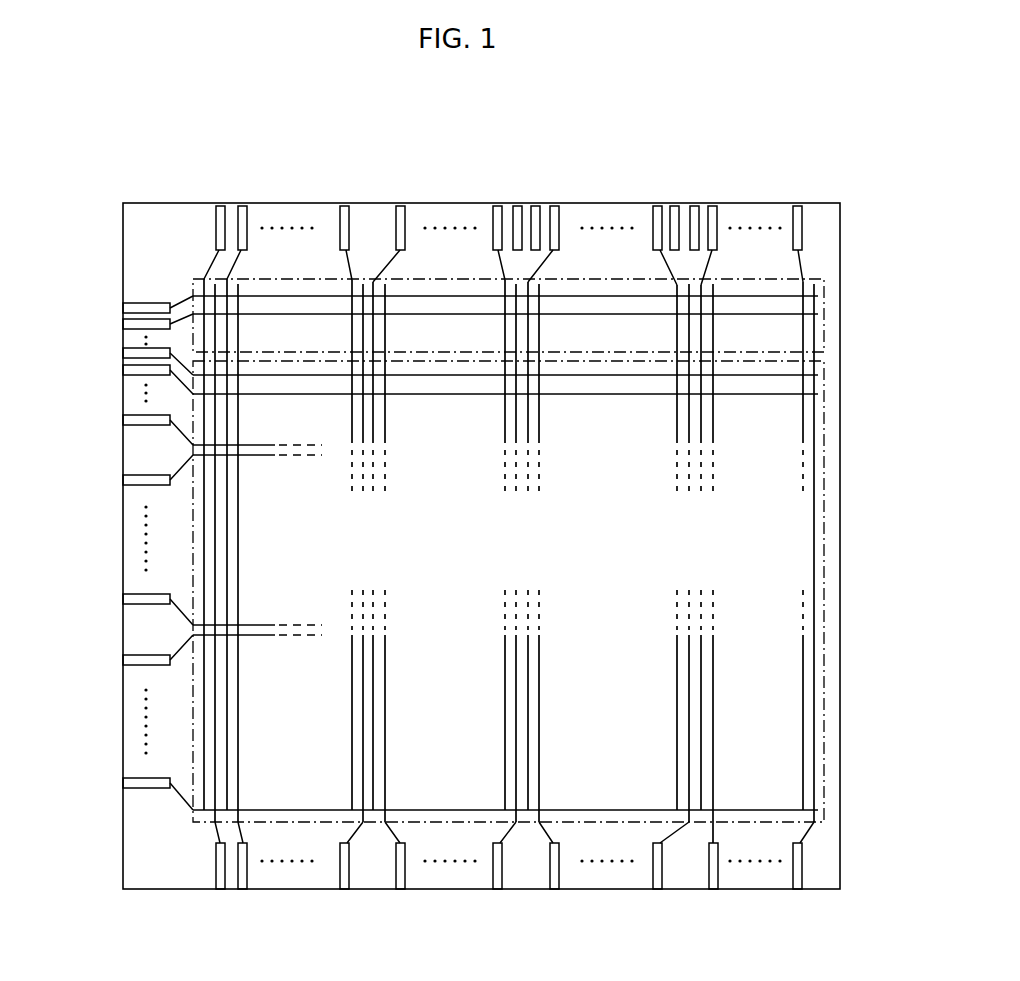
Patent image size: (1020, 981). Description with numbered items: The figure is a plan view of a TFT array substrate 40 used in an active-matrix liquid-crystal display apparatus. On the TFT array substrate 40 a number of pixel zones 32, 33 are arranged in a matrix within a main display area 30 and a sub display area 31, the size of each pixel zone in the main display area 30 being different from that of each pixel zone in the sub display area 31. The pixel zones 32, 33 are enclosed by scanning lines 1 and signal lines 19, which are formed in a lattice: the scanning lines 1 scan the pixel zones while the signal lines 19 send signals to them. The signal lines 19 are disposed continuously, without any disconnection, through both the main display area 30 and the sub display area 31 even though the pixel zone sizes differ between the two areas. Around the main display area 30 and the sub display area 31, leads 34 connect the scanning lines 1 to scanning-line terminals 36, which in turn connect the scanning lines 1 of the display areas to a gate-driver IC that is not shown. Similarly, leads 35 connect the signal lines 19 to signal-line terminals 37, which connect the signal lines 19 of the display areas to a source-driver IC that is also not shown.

The scanning line 1 is at (474, 306).
The signal line 19 is at (226, 578).
The main display area 30 is at (826, 602).
The sub display area 31 is at (826, 336).
The pixel zone 32 is at (219, 389).
The pixel zone 33 is at (212, 303).
The lead 34 is at (188, 300).
The lead 35 is at (213, 276).
The scanning-line terminal 36 is at (128, 308).
The signal-line terminal 37 is at (244, 206).
The TFT array substrate 40 is at (137, 188).